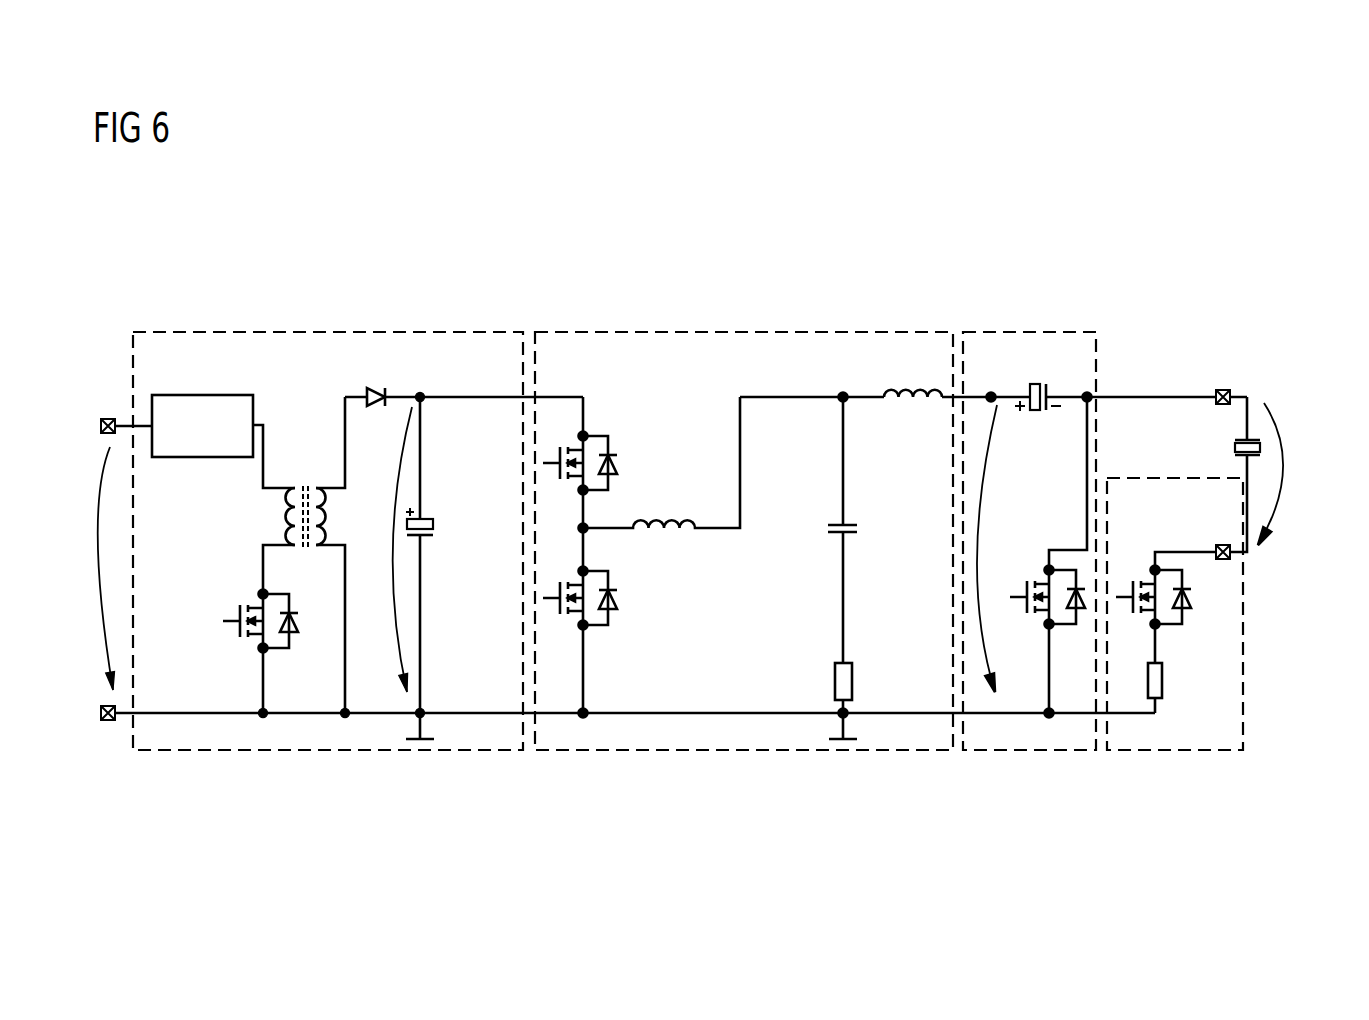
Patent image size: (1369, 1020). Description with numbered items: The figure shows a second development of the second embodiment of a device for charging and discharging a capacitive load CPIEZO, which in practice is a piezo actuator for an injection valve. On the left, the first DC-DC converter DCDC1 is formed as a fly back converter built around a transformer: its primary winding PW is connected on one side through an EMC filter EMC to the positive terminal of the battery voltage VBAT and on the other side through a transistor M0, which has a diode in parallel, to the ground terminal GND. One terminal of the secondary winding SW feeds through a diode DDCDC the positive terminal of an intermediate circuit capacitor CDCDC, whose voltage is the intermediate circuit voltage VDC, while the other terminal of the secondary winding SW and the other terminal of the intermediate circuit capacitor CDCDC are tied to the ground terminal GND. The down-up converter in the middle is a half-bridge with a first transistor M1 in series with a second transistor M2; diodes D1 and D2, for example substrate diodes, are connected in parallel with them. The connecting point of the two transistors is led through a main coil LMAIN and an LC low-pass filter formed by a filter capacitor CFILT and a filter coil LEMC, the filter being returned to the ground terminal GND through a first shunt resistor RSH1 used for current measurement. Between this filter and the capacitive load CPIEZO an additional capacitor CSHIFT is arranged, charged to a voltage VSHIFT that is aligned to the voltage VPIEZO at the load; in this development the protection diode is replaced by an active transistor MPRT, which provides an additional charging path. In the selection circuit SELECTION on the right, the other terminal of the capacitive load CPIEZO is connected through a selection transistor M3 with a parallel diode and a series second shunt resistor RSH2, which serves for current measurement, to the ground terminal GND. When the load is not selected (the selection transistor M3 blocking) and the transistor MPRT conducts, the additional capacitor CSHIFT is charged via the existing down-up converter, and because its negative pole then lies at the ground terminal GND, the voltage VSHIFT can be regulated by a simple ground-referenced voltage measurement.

The first DC-DC converter DCDC1 is at (328, 541).
The selection circuit SELECTION is at (1175, 614).
The battery voltage VBAT is at (77, 568).
The ground terminal GND is at (88, 735).
The EMC filter EMC is at (202, 426).
The primary winding PW is at (264, 516).
The secondary winding SW is at (343, 516).
The diode DDCDC is at (331, 378).
The intermediate circuit capacitor CDCDC is at (458, 568).
The intermediate circuit voltage VDC is at (383, 549).
The transistor M0 is at (281, 652).
The first transistor M1 is at (565, 449).
The diode D1 is at (601, 446).
The second transistor M2 is at (565, 583).
The diode D2 is at (601, 581).
The main coil LMAIN is at (661, 462).
The filter coil LEMC is at (910, 419).
The filter capacitor CFILT is at (879, 530).
The first shunt resistor RSH1 is at (879, 701).
The additional capacitor CSHIFT is at (1042, 419).
The voltage at the additional capacitor VSHIFT is at (1019, 548).
The transistor MPRT is at (1047, 575).
The capacitive load CPIEZO is at (1203, 474).
The voltage at the capacitive load VPIEZO is at (1311, 474).
The selection transistor M3 is at (1176, 595).
The second shunt resistor RSH2 is at (1188, 668).